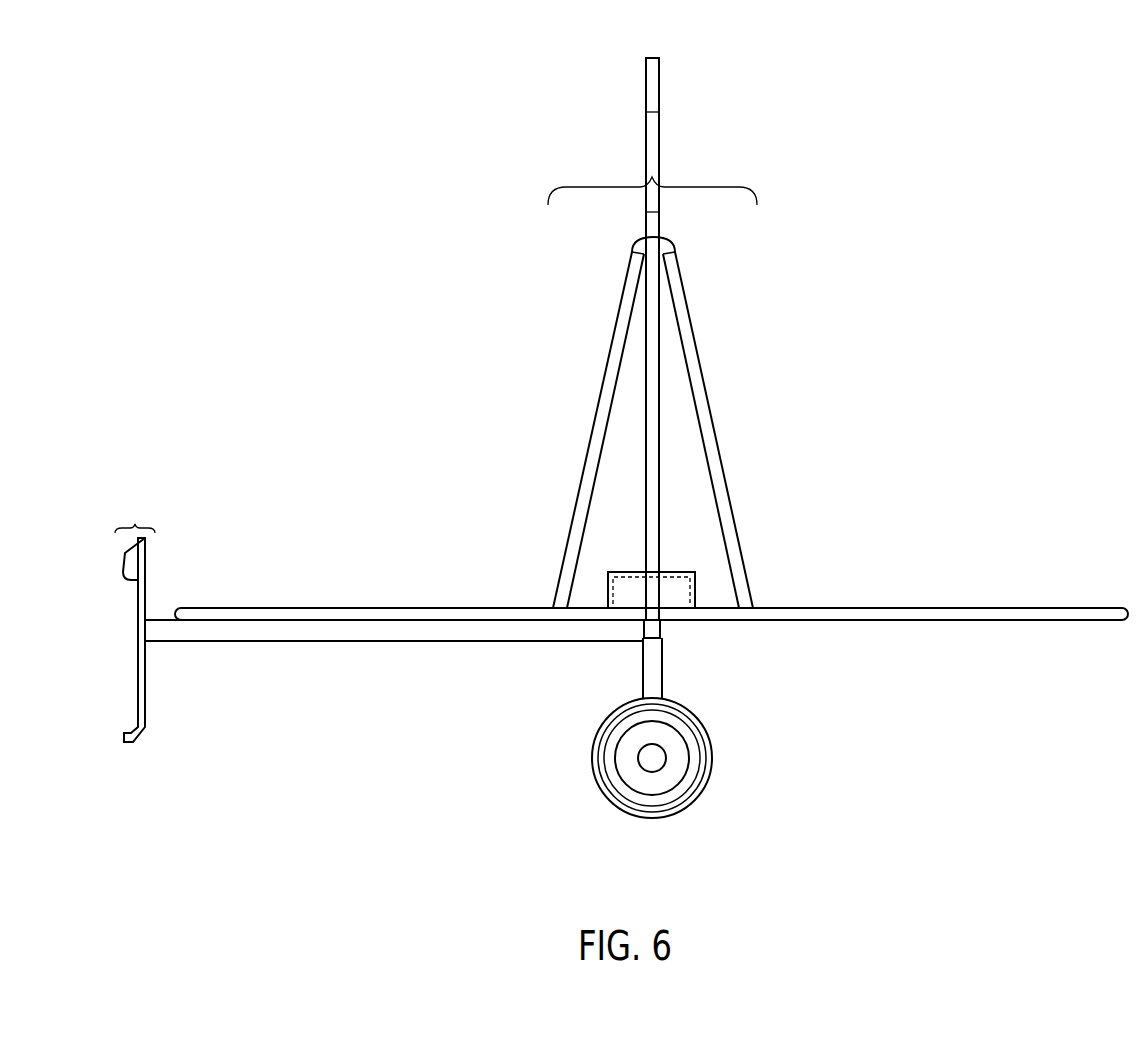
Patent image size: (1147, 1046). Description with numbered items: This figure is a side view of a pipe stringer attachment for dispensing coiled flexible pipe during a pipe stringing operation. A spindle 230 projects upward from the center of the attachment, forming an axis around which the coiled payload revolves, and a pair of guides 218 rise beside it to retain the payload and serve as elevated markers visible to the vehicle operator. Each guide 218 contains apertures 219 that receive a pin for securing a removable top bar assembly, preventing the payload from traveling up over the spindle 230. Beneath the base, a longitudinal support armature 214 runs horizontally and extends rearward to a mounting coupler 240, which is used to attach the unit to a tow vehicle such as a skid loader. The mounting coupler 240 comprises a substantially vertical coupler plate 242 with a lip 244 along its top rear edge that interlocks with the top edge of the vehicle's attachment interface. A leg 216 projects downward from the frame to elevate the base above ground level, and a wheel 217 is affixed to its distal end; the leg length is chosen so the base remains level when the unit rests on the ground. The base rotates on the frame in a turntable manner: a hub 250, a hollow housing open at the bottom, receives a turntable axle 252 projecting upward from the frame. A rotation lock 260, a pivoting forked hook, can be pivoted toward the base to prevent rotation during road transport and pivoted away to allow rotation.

The longitudinal support armature 214 is at (428, 628).
The leg 216 is at (652, 679).
The wheel 217 is at (677, 756).
The guide 218 is at (652, 432).
The aperture 219 is at (645, 62).
The spindle 230 is at (652, 170).
The mounting coupler 240 is at (157, 584).
The coupler plate 242 is at (142, 705).
The lip 244 is at (135, 555).
The hub 250 is at (628, 572).
The turntable axle 252 is at (613, 572).
The rotation lock 260 is at (172, 617).